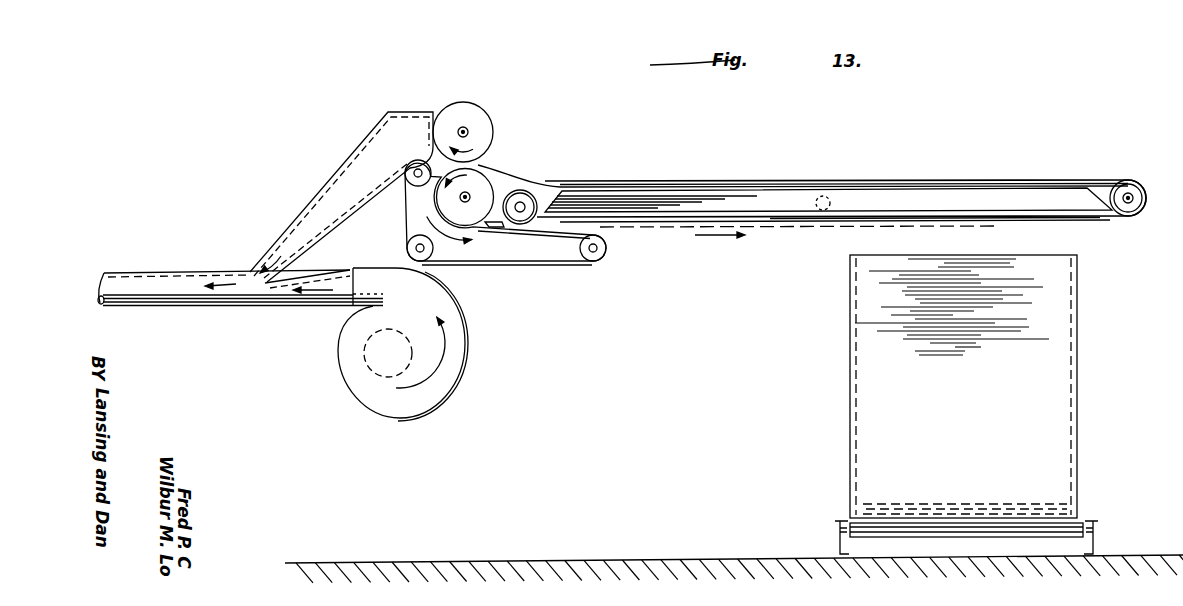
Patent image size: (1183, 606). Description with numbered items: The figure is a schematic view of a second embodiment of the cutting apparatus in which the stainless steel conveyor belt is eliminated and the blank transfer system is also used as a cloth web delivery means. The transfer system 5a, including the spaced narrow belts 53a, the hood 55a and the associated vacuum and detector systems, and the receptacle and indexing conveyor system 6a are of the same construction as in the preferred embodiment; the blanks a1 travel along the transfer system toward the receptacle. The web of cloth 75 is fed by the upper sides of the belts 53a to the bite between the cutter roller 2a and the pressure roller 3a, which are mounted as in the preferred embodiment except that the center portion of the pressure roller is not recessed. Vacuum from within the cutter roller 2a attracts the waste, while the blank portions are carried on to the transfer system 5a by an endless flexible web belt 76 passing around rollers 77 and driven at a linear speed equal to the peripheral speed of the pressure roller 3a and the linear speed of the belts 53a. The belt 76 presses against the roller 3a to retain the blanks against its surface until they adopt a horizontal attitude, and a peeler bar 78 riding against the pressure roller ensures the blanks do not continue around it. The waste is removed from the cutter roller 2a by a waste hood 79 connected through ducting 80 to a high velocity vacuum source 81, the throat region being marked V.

The waste hood 79 is at (405, 117).
The throat V is at (261, 275).
The ducting 80 is at (176, 293).
The high velocity vacuum source 81 is at (453, 338).
The cutter roller 2a is at (481, 121).
The pressure roller 3a is at (483, 188).
The endless flexible web belt 76 is at (515, 265).
The rollers 77 is at (413, 178).
The peeler bar 78 is at (492, 229).
The hood 55a is at (920, 197).
The spaced narrow belts 53a is at (1125, 218).
The web of cloth 75 is at (1142, 178).
The transfer system 5a is at (735, 263).
The articles a1 is at (813, 227).
The receptacle and indexing conveyor system 6a is at (1042, 446).